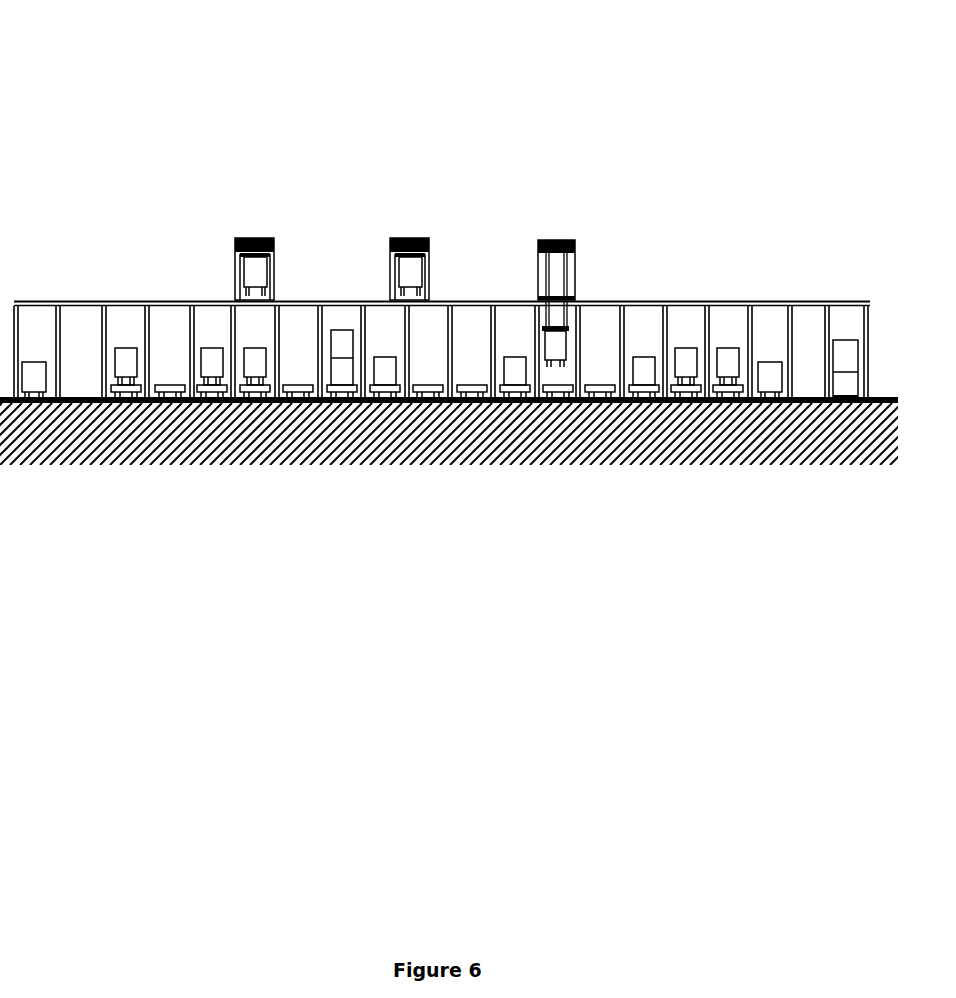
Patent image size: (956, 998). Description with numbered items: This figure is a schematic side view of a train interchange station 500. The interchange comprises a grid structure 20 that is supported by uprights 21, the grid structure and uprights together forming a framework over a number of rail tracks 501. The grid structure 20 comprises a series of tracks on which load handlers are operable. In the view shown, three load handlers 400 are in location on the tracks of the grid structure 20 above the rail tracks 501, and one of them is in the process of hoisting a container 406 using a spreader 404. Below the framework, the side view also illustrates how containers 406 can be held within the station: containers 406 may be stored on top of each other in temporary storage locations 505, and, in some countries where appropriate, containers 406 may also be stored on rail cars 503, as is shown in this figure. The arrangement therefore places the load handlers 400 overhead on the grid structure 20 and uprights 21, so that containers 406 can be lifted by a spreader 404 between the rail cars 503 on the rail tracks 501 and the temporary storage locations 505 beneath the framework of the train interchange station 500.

The train interchange station 500 is at (476, 244).
The grid structure 20 is at (693, 296).
The upright 21 is at (714, 328).
The load handler 400 is at (434, 243).
The spreader 404 is at (568, 324).
The container 406 is at (769, 361).
The rail track 501 is at (81, 384).
The rail car 503 is at (168, 378).
The temporary storage location 505 is at (811, 386).